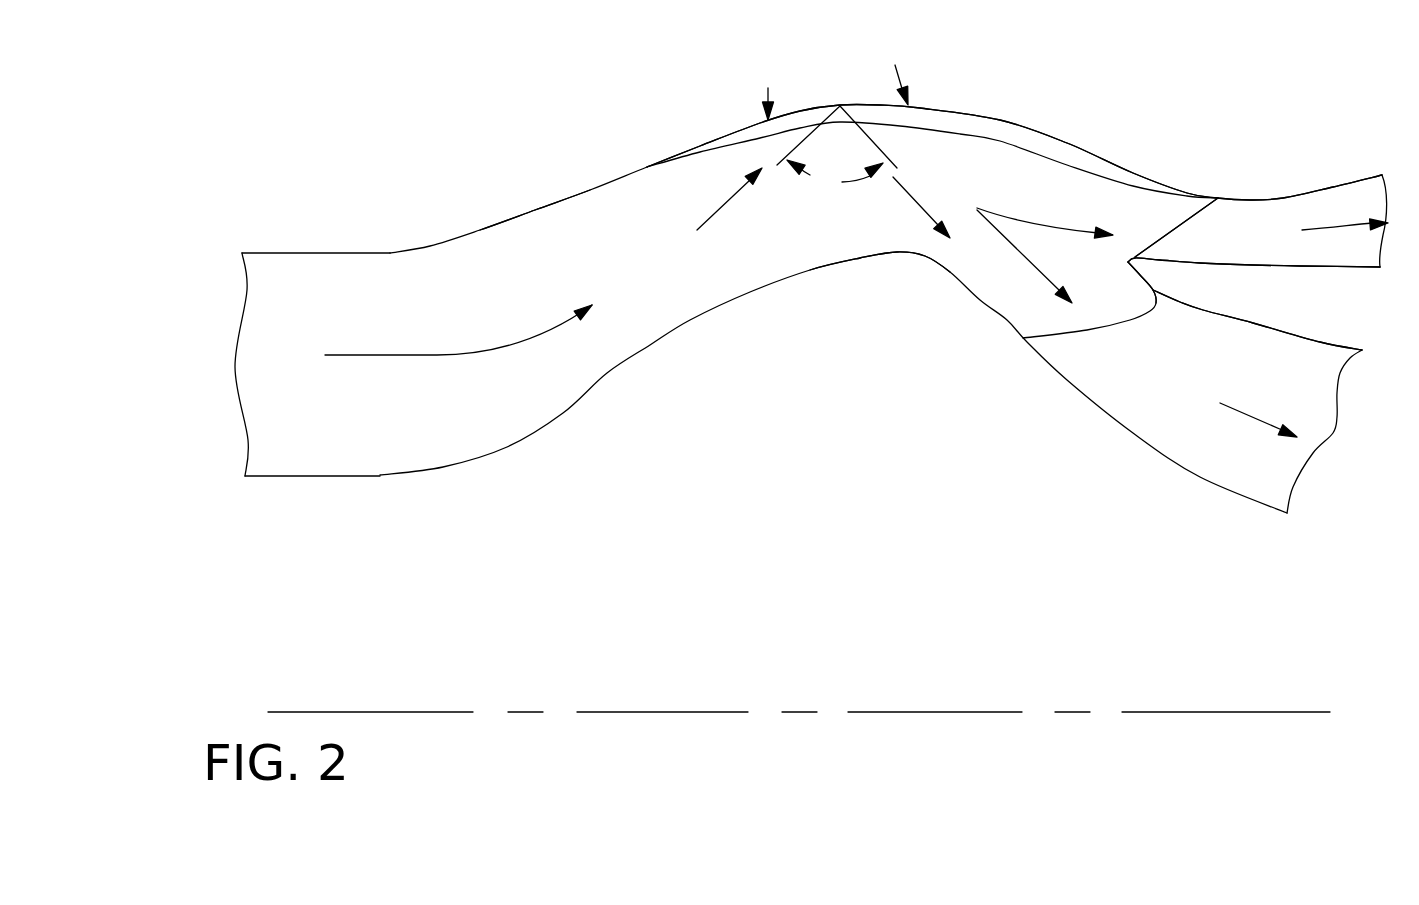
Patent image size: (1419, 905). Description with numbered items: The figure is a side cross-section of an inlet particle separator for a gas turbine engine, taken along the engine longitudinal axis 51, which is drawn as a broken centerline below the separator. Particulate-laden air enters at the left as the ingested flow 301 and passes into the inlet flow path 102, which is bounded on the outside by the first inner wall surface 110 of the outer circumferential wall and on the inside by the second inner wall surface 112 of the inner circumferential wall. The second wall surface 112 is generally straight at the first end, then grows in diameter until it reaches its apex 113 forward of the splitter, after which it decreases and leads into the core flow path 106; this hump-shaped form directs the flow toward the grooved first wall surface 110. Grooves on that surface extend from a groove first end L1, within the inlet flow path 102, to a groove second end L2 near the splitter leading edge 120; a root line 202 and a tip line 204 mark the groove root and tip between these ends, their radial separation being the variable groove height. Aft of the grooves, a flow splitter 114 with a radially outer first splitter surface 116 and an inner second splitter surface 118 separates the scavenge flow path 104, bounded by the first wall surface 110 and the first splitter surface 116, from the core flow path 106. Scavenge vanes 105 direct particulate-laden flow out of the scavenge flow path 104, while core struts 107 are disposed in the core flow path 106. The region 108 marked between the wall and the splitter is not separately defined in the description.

The first inner wall surface 110 is at (405, 252).
The groove root line 202 is at (957, 105).
The groove tip line 204 is at (893, 125).
The groove first end L1 is at (534, 210).
The groove second end L2 is at (1197, 193).
The second inner wall surface 112 is at (609, 374).
The apex 113 is at (895, 253).
The inlet flow 301 is at (458, 321).
The inlet flow path 102 is at (653, 261).
The scavenge vanes 105 is at (1173, 230).
The intermediate channel 108 is at (1068, 209).
The scavenge flow path 104 is at (1302, 221).
The first splitter surface 116 is at (1273, 247).
The flow splitter 114 is at (1317, 304).
The splitter leading edge 120 is at (1148, 275).
The core struts 107 is at (1086, 330).
The second splitter surface 118 is at (1278, 328).
The core flow path 106 is at (1198, 389).
The longitudinal axis 51 is at (638, 712).